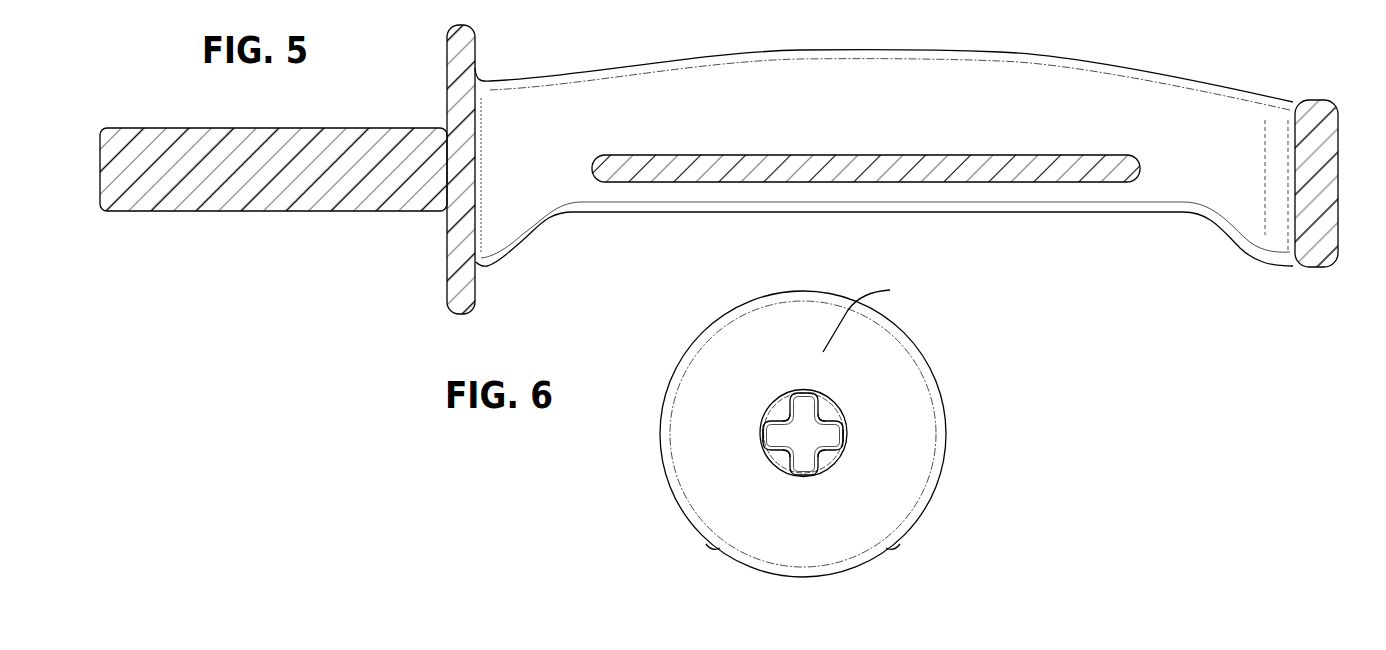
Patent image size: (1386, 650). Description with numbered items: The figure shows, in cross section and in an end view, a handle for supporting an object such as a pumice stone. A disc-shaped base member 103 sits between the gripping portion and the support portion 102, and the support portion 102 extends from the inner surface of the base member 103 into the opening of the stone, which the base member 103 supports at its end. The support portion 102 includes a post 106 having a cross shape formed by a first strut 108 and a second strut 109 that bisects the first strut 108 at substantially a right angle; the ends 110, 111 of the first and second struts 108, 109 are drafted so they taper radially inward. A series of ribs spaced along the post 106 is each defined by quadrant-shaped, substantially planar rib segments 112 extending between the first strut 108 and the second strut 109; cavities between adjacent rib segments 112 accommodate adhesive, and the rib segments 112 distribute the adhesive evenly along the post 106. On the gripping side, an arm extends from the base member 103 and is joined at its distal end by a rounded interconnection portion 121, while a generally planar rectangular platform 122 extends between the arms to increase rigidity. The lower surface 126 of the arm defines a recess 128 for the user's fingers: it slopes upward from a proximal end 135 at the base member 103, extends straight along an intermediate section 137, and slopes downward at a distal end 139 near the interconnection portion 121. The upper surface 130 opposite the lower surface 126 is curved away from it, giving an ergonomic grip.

In FIG. 5, the support portion 102 is at (319, 95).
In FIG. 6, the support portion 102 is at (881, 327).
In FIG. 5, the base member 103 is at (461, 60).
In FIG. 6, the base member 103 is at (902, 408).
In FIG. 5, the post 106 is at (208, 143).
In FIG. 6, the post 106 is at (803, 433).
In FIG. 6, the first strut 108 is at (823, 416).
In FIG. 6, the second strut 109 is at (822, 455).
In FIG. 6, the ends of the first strut 110 is at (792, 385).
In FIG. 6, the ends of the second strut 111 is at (847, 434).
In FIG. 6, the rib segments 112 is at (836, 410).
In FIG. 5, the interconnection portion 121 is at (1337, 135).
In FIG. 5, the platform 122 is at (796, 155).
In FIG. 5, the lower surface of the arm 126 is at (713, 212).
In FIG. 5, the recess 128 is at (1028, 240).
In FIG. 5, the upper surface of the arm 130 is at (965, 60).
In FIG. 5, the proximal end of the lower surface 135 is at (523, 240).
In FIG. 5, the intermediate section of the arm 137 is at (855, 212).
In FIG. 5, the distal end of the lower surface 139 is at (1233, 238).